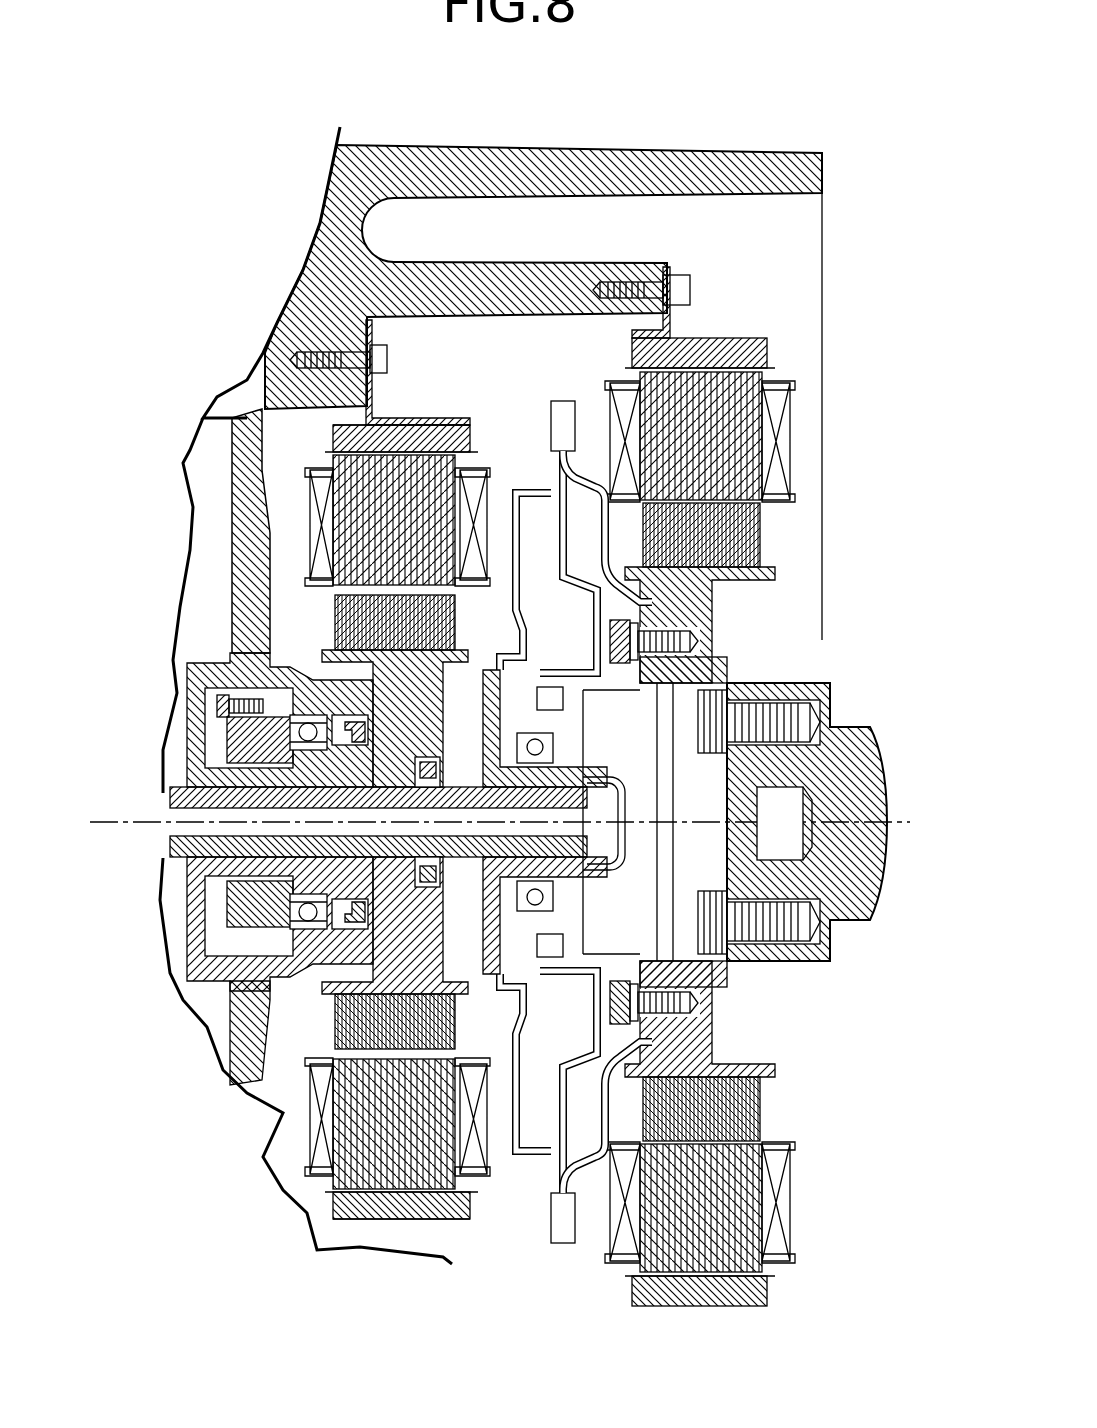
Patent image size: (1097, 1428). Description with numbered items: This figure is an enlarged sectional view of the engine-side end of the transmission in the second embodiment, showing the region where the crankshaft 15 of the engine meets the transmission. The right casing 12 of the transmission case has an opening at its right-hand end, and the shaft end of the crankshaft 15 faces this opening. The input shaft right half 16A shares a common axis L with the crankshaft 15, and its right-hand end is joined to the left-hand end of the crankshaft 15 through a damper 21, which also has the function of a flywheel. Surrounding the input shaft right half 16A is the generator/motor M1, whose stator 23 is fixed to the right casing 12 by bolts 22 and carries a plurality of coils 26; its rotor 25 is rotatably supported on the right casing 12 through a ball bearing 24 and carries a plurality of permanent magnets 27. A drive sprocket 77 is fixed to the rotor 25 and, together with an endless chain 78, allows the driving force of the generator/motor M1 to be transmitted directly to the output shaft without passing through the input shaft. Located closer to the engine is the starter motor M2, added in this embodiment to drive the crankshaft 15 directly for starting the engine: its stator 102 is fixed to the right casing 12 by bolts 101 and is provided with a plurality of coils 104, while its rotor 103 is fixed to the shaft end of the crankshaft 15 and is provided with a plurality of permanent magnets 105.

The right casing 12 is at (548, 165).
The bolts 101 is at (692, 290).
The starter motor M2 is at (763, 755).
The stator 102 is at (769, 801).
The coils 104 is at (783, 443).
The permanent magnets 105 is at (710, 568).
The bolts 22 is at (385, 353).
The generator/motor M1 is at (411, 768).
The stator 23 is at (402, 807).
The coils 26 is at (312, 536).
The ball bearing 24 is at (310, 722).
The endless chain 78 is at (228, 697).
The drive sprocket 77 is at (237, 743).
The axis L is at (150, 820).
The permanent magnets 27 is at (413, 598).
The rotor 25 is at (450, 688).
The crankshaft 15 is at (848, 732).
The rotor 103 is at (728, 1002).
The damper 21 is at (522, 1180).
The input shaft right half 16A is at (207, 856).